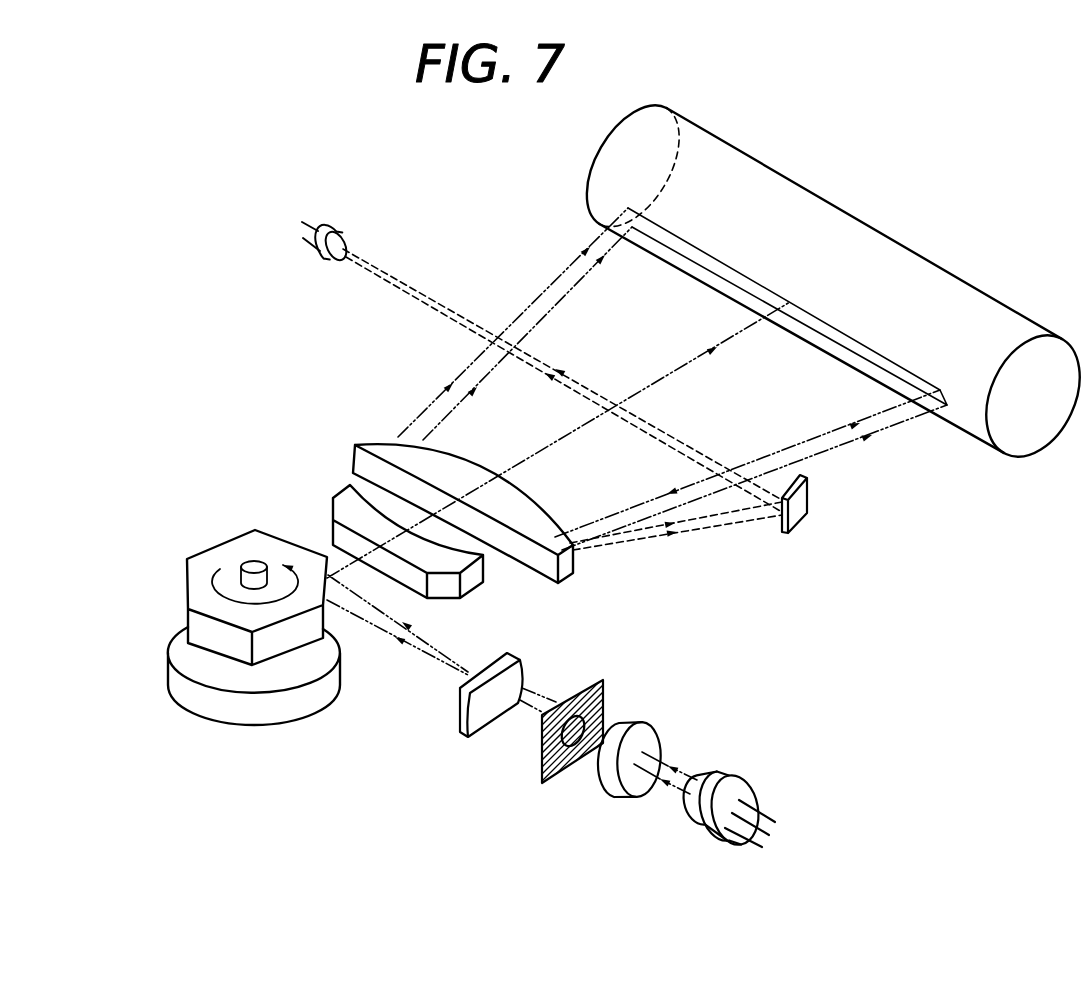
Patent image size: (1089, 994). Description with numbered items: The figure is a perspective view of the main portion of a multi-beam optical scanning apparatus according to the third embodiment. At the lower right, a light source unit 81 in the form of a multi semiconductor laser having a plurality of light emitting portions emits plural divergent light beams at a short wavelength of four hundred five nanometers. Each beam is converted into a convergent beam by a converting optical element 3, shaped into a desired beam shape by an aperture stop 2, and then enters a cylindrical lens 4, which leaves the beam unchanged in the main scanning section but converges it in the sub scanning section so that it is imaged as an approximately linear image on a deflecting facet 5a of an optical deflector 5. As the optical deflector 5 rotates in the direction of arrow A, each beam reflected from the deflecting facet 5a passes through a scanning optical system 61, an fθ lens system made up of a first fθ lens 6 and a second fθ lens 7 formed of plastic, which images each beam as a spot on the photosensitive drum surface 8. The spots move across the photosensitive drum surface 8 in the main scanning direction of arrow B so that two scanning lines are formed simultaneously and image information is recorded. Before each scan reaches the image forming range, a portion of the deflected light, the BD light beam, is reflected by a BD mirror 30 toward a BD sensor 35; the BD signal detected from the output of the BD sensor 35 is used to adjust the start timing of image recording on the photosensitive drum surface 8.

The aperture stop 2 is at (543, 740).
The converting optical element 3 is at (603, 780).
The cylindrical lens 4 is at (462, 703).
The optical deflector 5 is at (210, 546).
The deflecting facet 5a is at (272, 648).
The first fθ lens 6 is at (345, 500).
The second fθ lens 7 is at (380, 440).
The scanning optical system 61 is at (333, 372).
The photosensitive drum surface 8 is at (877, 250).
The BD mirror 30 is at (802, 507).
The BD sensor 35 is at (340, 232).
The light source unit 81 is at (718, 840).